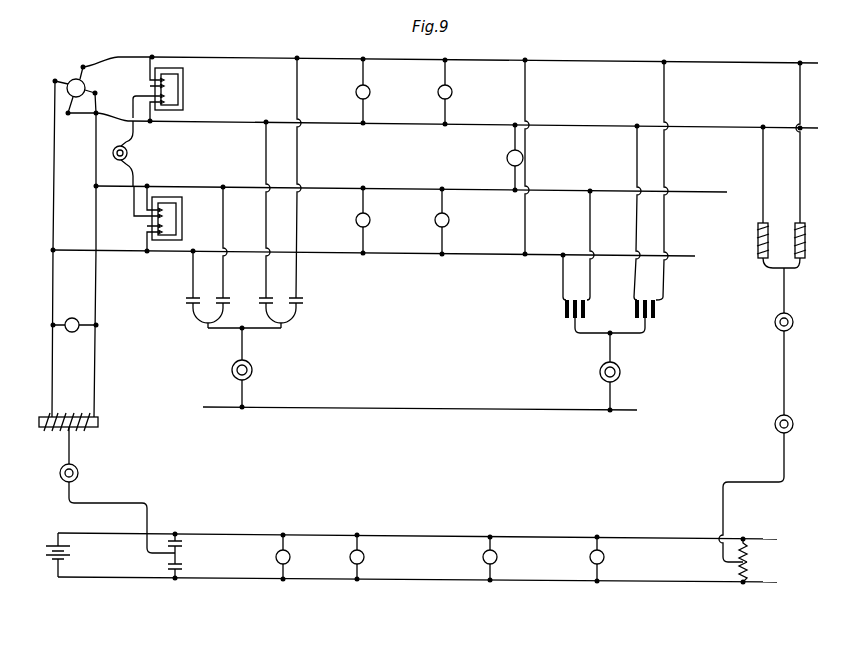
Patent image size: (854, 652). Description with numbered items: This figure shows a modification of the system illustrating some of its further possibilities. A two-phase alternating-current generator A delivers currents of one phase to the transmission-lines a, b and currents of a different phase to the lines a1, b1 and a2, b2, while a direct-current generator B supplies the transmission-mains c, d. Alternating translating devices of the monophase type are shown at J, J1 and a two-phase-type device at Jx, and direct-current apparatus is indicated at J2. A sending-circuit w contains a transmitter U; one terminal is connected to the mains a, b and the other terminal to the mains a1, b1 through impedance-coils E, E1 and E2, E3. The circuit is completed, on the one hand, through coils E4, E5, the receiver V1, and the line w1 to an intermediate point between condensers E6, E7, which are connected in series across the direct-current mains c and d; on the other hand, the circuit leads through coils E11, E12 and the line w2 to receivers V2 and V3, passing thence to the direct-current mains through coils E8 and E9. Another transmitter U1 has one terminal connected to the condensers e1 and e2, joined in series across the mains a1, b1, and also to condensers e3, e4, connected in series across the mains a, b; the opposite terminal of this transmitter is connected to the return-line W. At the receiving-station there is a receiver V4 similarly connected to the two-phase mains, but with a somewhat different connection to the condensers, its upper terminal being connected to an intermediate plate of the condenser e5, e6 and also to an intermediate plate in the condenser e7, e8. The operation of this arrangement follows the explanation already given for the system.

The transmission-line a is at (484, 51).
The transmission-line b is at (474, 116).
The transmission-line a1 is at (411, 181).
The transmission-line b1 is at (373, 245).
The transmission-line a2 is at (42, 249).
The transmission-line b2 is at (104, 264).
The direct-current main c is at (417, 526).
The direct-current main d is at (417, 570).
The return-line W is at (420, 398).
The two-phase alternating-current generator A is at (87, 89).
The direct-current generator B is at (47, 555).
The impedance-coil E is at (166, 83).
The impedance-coil E1 is at (155, 105).
The impedance-coil E2 is at (158, 213).
The impedance-coil E3 is at (162, 235).
The coil E4 is at (68, 414).
The coil E5 is at (79, 414).
The condenser E6 is at (185, 548).
The condenser E7 is at (185, 569).
The coil E8 is at (753, 550).
The coil E9 is at (753, 573).
The coil E11 is at (752, 231).
The coil E12 is at (812, 231).
The alternating translating device J is at (392, 91).
The alternating translating device J1 is at (250, 260).
The alternating translating device Jx is at (524, 157).
The direct-current apparatus J2 is at (446, 558).
The transmitter U is at (126, 153).
The transmitter U1 is at (244, 367).
The receiver V1 is at (117, 490).
The receiver V2 is at (793, 424).
The receiver V3 is at (793, 364).
The receiver V4 is at (610, 364).
The sending-circuit w is at (136, 153).
The line w1 is at (87, 490).
The line w2 is at (764, 410).
The condenser e1 is at (186, 310).
The condenser e2 is at (217, 313).
The condenser e3 is at (260, 310).
The condenser e4 is at (290, 313).
The condenser e5 is at (563, 301).
The condenser e6 is at (585, 301).
The condenser e7 is at (634, 301).
The condenser e8 is at (655, 301).